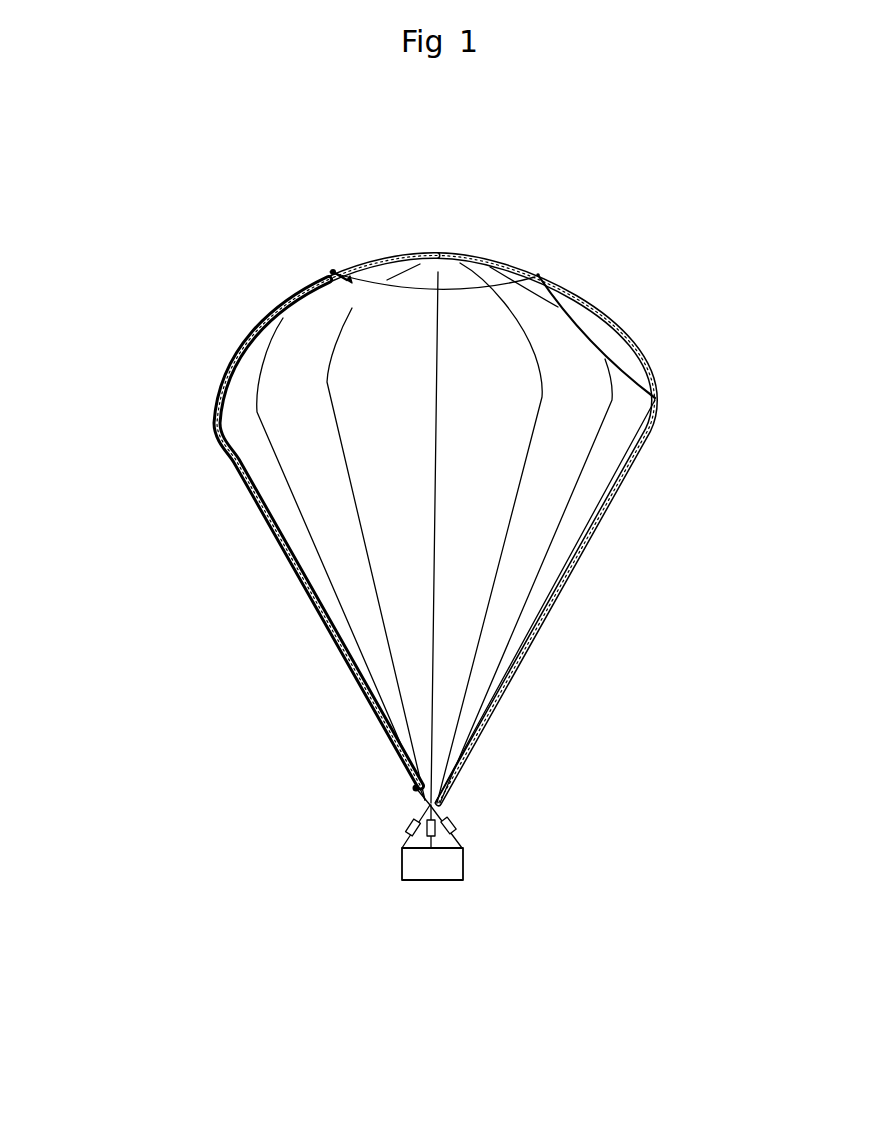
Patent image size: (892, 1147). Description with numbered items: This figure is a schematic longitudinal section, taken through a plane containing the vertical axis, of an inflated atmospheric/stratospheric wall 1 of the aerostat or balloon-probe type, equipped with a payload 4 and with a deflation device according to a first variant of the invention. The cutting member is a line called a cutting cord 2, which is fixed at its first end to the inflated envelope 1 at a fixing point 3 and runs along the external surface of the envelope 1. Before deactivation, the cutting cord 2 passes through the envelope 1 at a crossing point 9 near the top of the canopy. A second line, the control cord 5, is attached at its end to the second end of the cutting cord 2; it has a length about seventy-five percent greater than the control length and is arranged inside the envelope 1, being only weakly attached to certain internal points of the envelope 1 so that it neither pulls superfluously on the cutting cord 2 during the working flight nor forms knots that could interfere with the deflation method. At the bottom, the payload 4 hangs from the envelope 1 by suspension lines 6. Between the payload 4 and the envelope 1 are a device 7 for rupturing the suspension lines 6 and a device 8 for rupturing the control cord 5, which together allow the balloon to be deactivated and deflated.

The inflated envelope 1 is at (633, 468).
The cutting cord 2 is at (214, 423).
The fixing point 3 is at (417, 788).
The payload 4 is at (424, 870).
The control cord 5 is at (607, 362).
The suspension lines 6 is at (405, 839).
The device for rupturing the suspension lines 7 is at (408, 826).
The device for rupturing the control cord 8 is at (433, 835).
The crossing point 9 is at (333, 269).